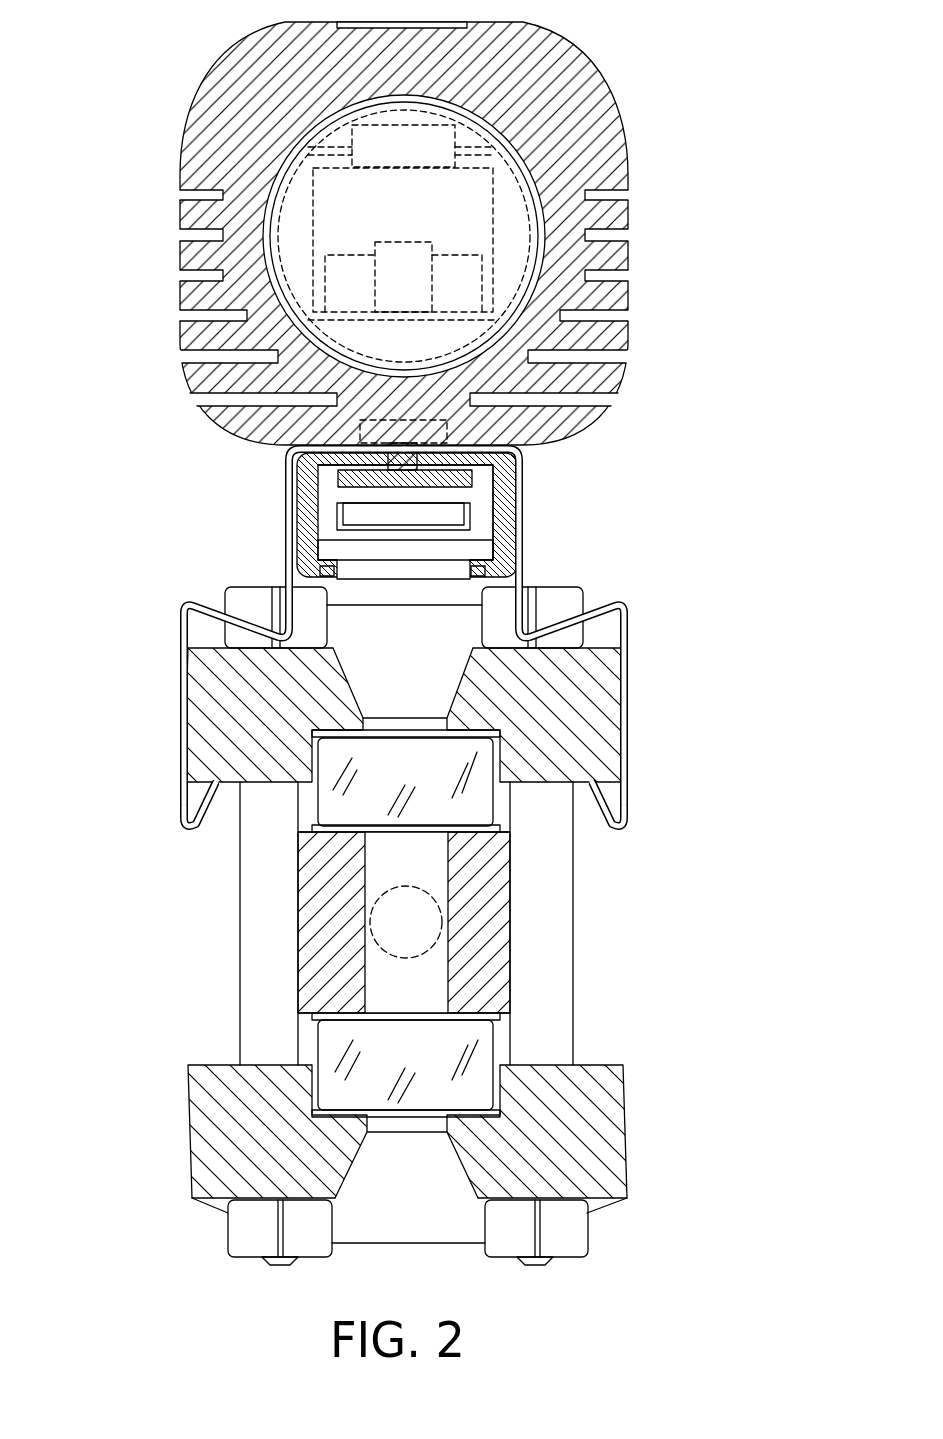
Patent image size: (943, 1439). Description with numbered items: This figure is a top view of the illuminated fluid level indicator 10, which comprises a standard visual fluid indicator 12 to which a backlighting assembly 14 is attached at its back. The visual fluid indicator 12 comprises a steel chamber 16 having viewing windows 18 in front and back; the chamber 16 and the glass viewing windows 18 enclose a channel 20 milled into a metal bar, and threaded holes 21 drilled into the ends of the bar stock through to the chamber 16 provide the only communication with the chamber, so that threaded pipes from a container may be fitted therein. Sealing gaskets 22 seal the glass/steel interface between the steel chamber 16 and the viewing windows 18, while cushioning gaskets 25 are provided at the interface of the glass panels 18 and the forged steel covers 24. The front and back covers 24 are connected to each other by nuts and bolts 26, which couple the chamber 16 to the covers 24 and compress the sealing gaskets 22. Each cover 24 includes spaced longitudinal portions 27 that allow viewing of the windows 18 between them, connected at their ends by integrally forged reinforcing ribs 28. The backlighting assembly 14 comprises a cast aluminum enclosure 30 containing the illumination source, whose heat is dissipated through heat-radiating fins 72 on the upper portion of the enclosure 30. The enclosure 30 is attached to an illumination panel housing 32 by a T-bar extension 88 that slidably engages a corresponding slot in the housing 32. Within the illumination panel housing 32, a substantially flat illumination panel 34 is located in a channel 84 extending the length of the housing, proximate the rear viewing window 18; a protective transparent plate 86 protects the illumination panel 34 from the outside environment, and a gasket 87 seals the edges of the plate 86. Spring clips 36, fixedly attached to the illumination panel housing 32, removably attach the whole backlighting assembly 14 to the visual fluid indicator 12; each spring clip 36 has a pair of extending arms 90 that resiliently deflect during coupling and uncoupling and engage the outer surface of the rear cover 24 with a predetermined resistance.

The illuminated fluid level indicator 10 is at (626, 59).
The visual fluid indicator 12 is at (199, 870).
The backlighting assembly 14 is at (151, 415).
The steel chamber 16 is at (327, 948).
The viewing windows 18 is at (377, 792).
The channel 20 is at (400, 871).
The holes 21 is at (410, 960).
The sealing gaskets 22 is at (423, 832).
The covers 24 is at (240, 693).
The cushioning gaskets 25 is at (420, 735).
The nuts and bolts 26 is at (258, 610).
The spaced longitudinal portions 27 is at (215, 1157).
The reinforcing ribs 28 is at (417, 630).
The enclosure 30 is at (625, 140).
The illumination panel housing 32 is at (440, 603).
The illumination panel 34 is at (420, 517).
The spring clips 36 is at (190, 745).
The heat-radiating fins 72 is at (622, 300).
The channel 84 is at (297, 492).
The protective transparent plate 86 is at (387, 553).
The gasket 87 is at (477, 555).
The T-bar extension 88 is at (440, 478).
The extending arms 90 is at (183, 640).